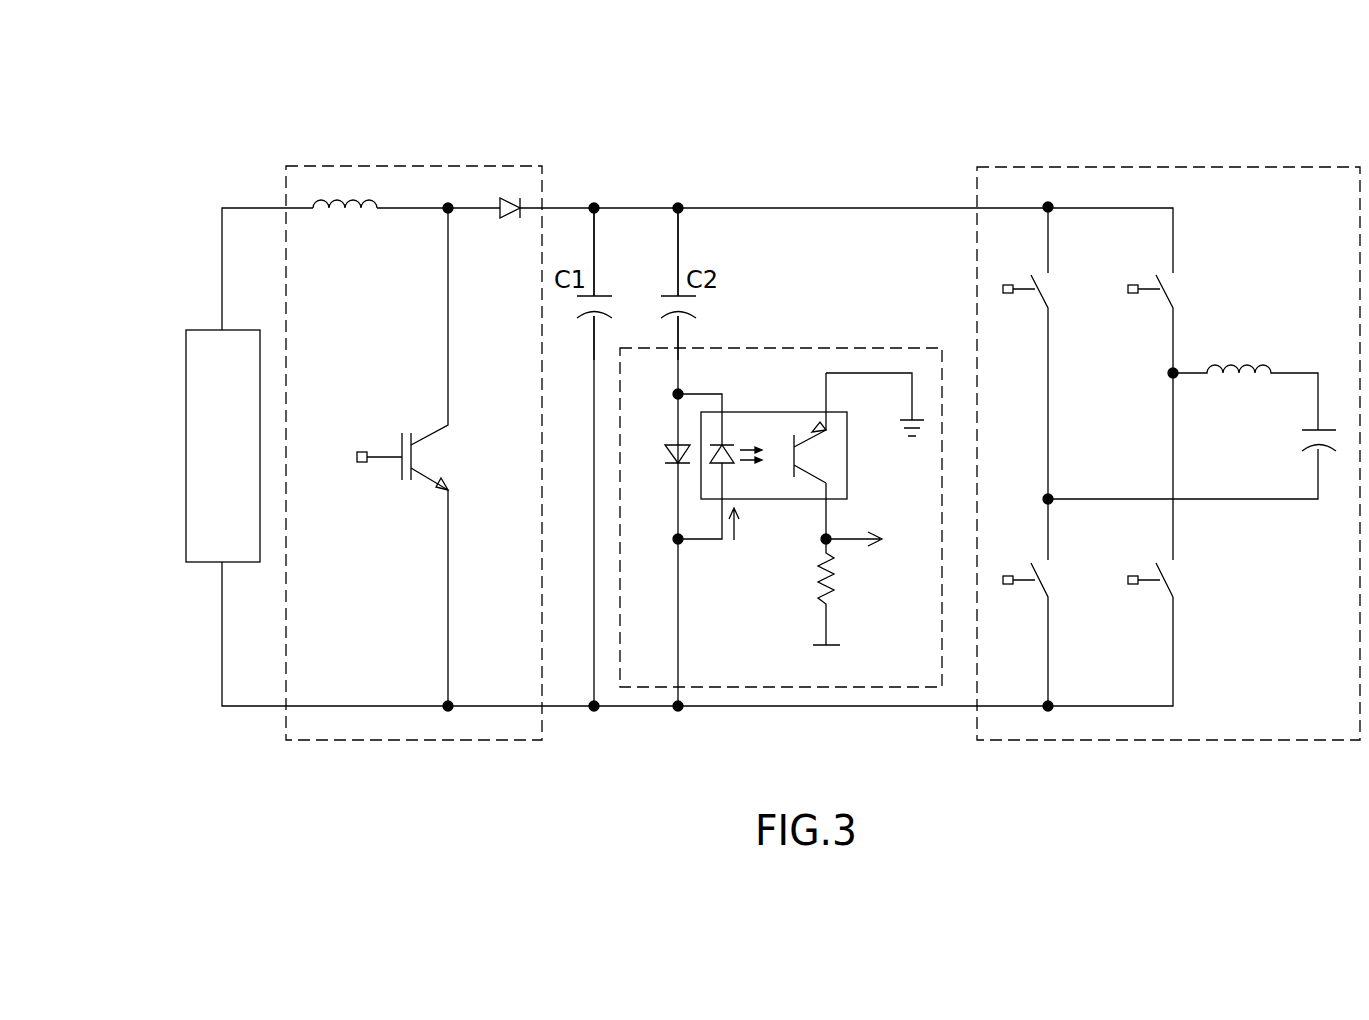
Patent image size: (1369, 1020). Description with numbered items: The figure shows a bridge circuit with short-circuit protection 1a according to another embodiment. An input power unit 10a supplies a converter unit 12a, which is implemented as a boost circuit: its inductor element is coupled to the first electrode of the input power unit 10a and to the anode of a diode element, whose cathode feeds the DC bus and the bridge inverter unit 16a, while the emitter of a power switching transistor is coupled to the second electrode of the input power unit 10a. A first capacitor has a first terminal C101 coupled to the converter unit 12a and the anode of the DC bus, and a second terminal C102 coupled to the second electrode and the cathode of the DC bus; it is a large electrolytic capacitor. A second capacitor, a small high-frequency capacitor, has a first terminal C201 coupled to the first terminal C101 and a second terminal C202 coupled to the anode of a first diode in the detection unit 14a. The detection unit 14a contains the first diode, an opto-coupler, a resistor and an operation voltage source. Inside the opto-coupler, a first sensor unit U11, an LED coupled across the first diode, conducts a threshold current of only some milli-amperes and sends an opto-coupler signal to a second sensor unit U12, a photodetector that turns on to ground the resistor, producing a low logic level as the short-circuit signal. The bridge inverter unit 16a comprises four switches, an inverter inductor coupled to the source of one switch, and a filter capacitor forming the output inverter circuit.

The bridge circuit with short-circuit protection 1a is at (233, 60).
The input power unit 10a is at (186, 458).
The converter unit 12a is at (410, 166).
The detection unit 14a is at (781, 556).
The bridge inverter unit 16a is at (1168, 166).
The first terminal of the first capacitor C101 is at (594, 243).
The second terminal of the first capacitor C102 is at (594, 331).
The first terminal of the second capacitor C201 is at (678, 243).
The second terminal of the second capacitor C202 is at (678, 332).
The first sensor unit U11 is at (735, 438).
The second sensor unit U12 is at (815, 455).